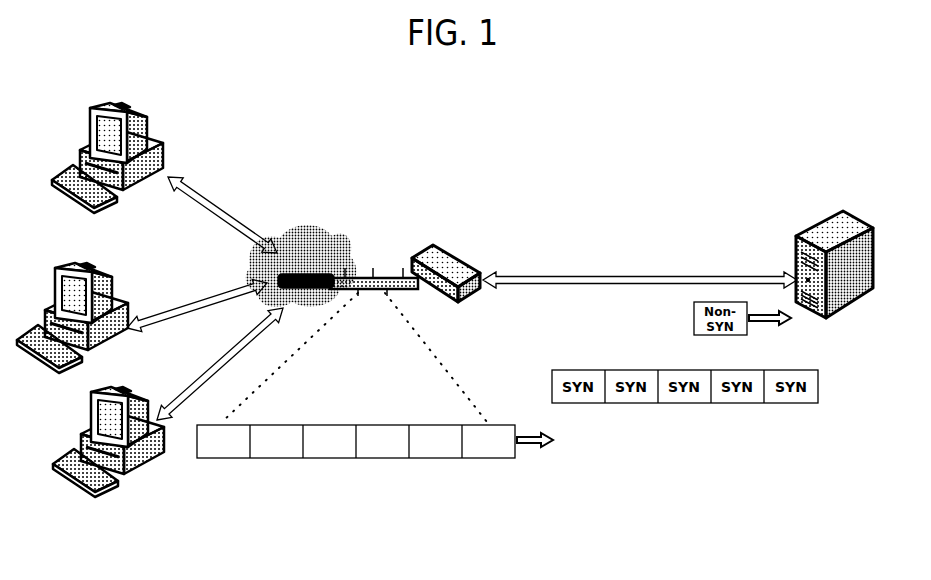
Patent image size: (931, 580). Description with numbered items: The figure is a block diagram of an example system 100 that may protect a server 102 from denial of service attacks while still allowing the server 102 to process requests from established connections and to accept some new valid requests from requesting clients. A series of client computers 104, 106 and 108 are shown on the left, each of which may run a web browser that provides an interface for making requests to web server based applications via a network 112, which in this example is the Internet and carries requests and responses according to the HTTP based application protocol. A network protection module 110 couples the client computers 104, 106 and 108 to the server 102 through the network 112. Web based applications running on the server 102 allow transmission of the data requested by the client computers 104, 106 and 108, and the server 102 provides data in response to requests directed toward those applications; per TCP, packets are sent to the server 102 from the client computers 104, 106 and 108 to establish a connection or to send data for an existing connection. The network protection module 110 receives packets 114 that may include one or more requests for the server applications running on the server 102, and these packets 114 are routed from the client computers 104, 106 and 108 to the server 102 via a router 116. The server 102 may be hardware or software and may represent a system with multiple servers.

The system 100 is at (502, 158).
The server 102 is at (814, 232).
The client computer 104 is at (162, 148).
The client computer 106 is at (113, 277).
The client computer 108 is at (127, 387).
The network protection module 110 is at (443, 253).
The network 112 is at (318, 230).
The packets 114 is at (330, 458).
The router 116 is at (330, 273).